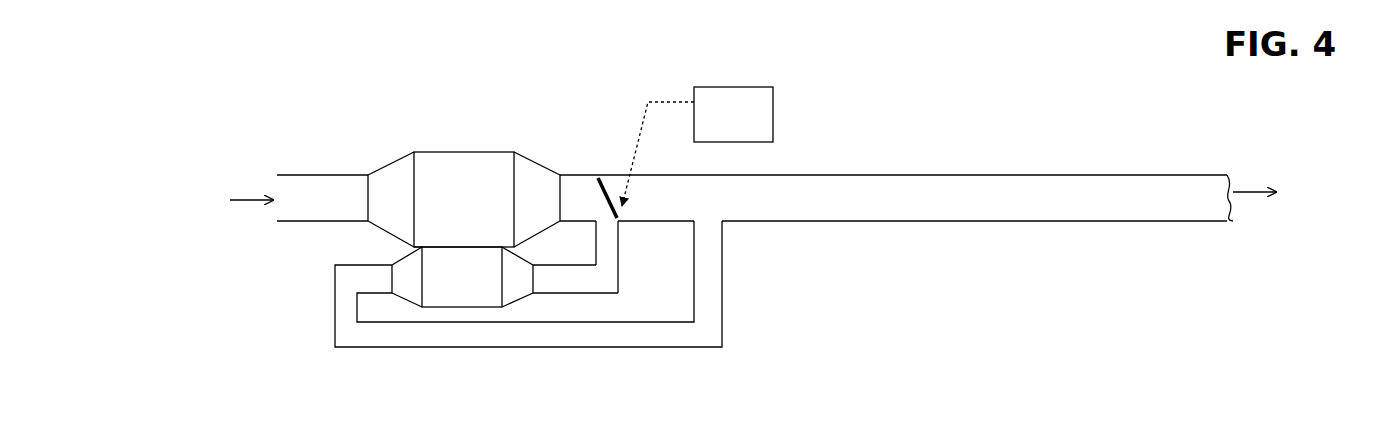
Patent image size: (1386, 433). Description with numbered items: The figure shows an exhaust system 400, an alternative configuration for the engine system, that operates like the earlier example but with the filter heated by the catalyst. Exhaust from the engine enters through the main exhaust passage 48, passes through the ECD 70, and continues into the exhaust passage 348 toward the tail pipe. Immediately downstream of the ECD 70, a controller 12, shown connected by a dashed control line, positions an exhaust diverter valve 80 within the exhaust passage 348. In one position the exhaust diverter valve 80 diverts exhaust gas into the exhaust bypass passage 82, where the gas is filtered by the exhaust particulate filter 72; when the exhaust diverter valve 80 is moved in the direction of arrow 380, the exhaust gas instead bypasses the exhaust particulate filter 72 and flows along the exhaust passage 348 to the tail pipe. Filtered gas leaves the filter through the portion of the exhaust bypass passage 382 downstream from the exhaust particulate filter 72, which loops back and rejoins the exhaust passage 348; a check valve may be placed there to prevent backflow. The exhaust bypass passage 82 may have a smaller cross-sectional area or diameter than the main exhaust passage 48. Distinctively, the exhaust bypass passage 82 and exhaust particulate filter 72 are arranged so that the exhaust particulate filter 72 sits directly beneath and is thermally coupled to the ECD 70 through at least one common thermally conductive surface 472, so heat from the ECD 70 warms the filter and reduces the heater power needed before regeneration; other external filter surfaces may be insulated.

The exhaust system 400 is at (1259, 136).
The main exhaust passage 48 is at (313, 209).
The ECD 70 is at (450, 209).
The exhaust particulate filter 72 is at (447, 286).
The exhaust diverter valve 80 is at (606, 186).
The exhaust bypass passage 82 is at (573, 286).
The controller 12 is at (723, 124).
The exhaust passage 348 is at (642, 209).
The arrow 380 is at (580, 214).
The portion of the exhaust bypass passage downstream from the exhaust particulate fi 382 is at (542, 344).
The common thermally conductive surface 472 is at (443, 246).